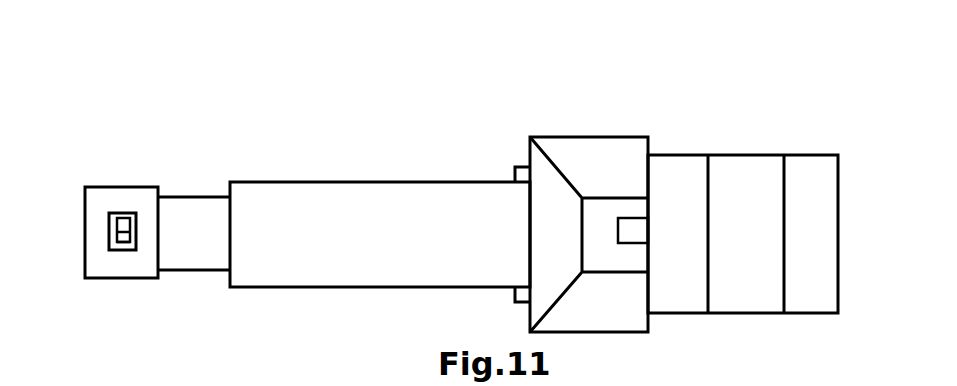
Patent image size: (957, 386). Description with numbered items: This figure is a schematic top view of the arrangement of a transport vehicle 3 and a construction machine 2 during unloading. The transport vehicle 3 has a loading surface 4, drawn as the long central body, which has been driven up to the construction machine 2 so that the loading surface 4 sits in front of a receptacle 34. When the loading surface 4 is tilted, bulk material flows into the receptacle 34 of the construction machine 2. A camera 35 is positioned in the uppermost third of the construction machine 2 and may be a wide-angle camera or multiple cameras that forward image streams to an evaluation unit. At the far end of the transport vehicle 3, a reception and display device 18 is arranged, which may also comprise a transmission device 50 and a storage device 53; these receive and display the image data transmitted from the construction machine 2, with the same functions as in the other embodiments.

The transport vehicle 3 is at (186, 105).
The reception and display device 18 is at (110, 223).
The transmission device 50 is at (125, 222).
The storage device 53 is at (118, 237).
The loading surface 4 is at (333, 195).
The receptacle 34 is at (577, 145).
The camera 35 is at (632, 228).
The construction machine 2 is at (762, 172).